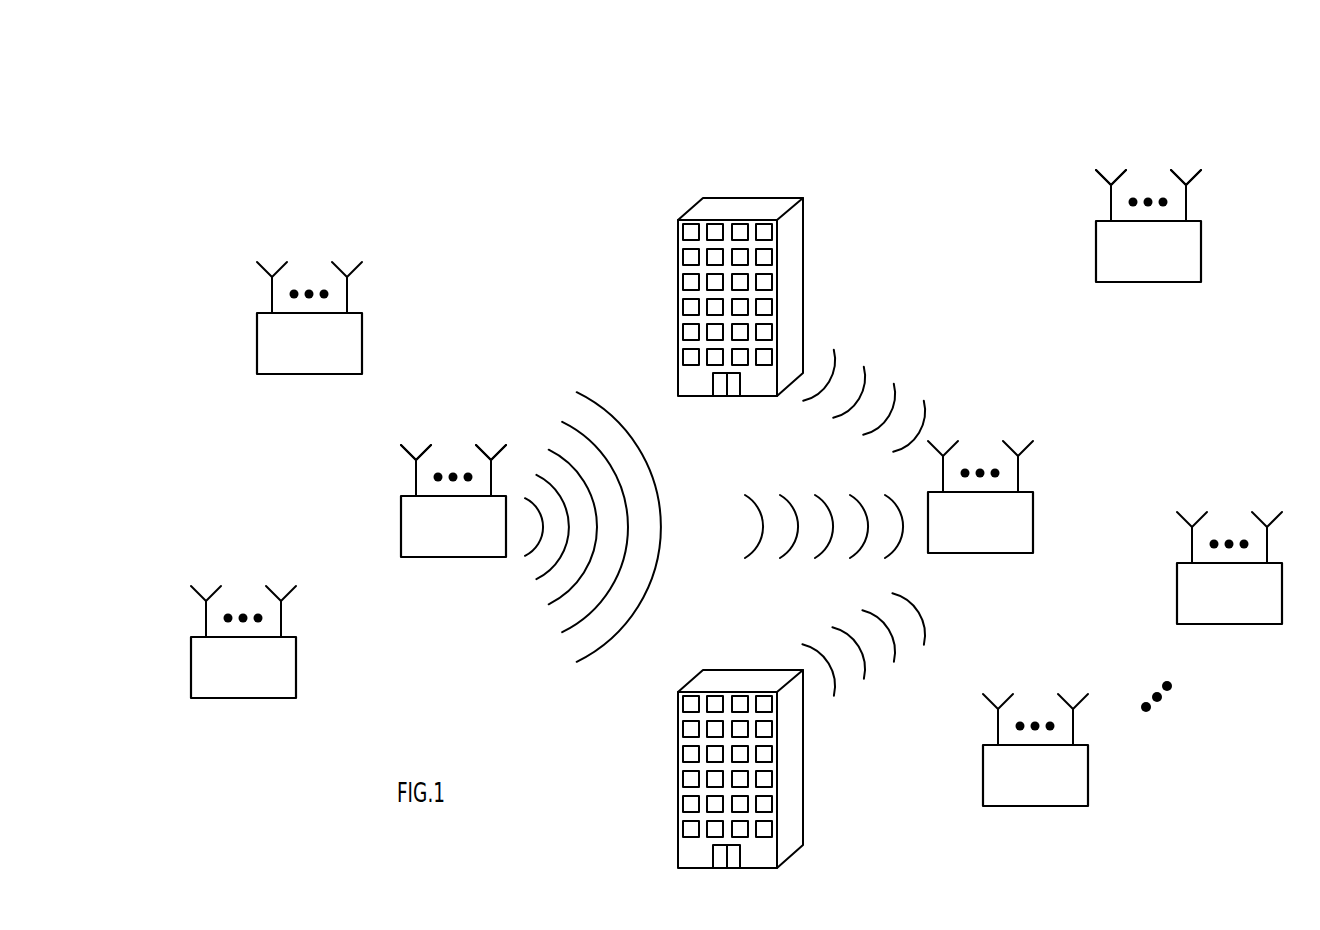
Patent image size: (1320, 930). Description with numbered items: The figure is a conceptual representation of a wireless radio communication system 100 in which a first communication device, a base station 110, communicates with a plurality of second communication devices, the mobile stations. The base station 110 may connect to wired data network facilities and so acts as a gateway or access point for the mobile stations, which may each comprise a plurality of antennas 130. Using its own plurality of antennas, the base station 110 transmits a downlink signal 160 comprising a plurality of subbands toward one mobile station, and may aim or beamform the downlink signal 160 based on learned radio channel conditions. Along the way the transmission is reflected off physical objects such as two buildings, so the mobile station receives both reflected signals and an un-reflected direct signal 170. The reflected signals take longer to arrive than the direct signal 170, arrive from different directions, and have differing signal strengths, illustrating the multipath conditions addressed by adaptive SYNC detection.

The wireless radio communication system 100 is at (462, 213).
The base station 110 is at (401, 523).
The antennas 130 is at (1205, 162).
The downlink signal 160 is at (595, 403).
The direct signal 170 is at (750, 552).